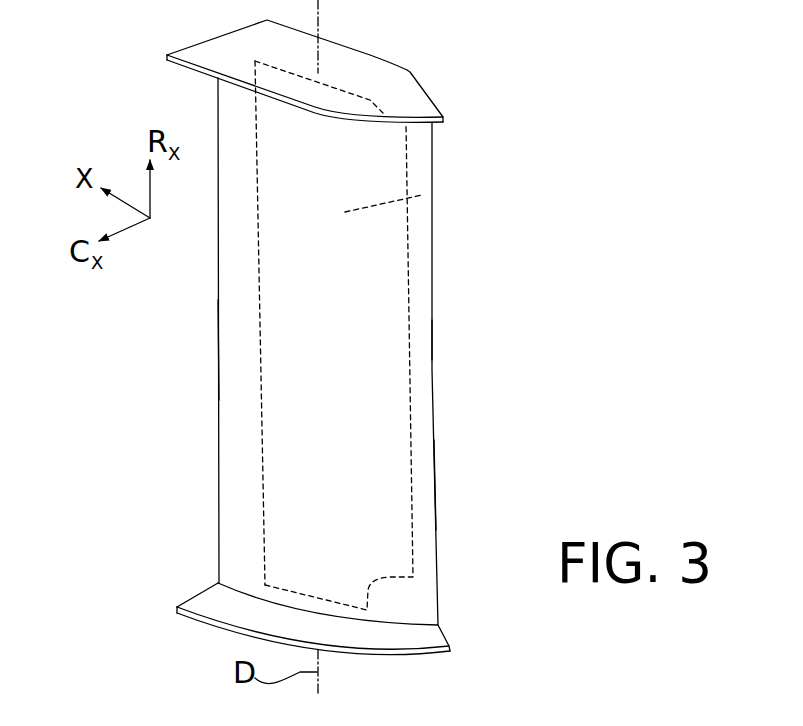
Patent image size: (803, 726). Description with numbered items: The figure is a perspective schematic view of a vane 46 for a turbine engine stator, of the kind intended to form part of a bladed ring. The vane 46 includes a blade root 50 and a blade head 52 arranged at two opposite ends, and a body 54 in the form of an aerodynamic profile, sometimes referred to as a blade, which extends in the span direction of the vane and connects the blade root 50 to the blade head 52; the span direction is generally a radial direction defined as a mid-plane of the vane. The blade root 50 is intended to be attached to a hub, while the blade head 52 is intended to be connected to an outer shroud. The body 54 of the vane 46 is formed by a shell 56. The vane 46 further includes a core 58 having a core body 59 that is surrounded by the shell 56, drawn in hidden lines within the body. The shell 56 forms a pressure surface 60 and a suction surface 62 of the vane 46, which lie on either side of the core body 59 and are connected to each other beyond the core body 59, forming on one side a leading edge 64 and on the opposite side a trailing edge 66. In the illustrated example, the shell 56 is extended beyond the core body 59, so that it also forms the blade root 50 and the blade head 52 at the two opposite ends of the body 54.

The vane 46 is at (553, 147).
The blade root 50 is at (213, 602).
The blade head 52 is at (356, 70).
The body 54 is at (434, 302).
The shell 56 is at (420, 338).
The core 58 is at (406, 280).
The core body 59 is at (360, 223).
The pressure surface 60 is at (432, 197).
The suction surface 62 is at (365, 357).
The leading edge 64 is at (437, 487).
The trailing edge 66 is at (218, 347).